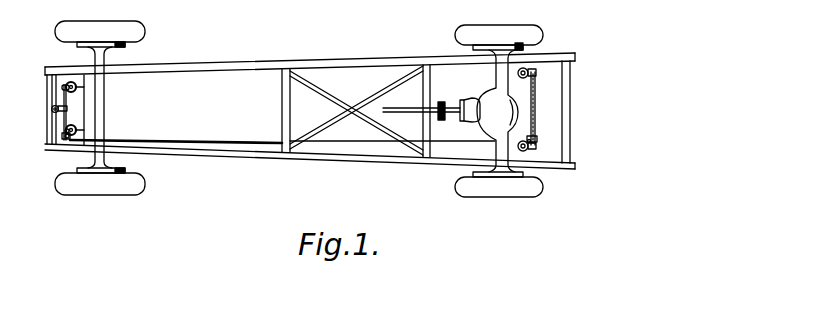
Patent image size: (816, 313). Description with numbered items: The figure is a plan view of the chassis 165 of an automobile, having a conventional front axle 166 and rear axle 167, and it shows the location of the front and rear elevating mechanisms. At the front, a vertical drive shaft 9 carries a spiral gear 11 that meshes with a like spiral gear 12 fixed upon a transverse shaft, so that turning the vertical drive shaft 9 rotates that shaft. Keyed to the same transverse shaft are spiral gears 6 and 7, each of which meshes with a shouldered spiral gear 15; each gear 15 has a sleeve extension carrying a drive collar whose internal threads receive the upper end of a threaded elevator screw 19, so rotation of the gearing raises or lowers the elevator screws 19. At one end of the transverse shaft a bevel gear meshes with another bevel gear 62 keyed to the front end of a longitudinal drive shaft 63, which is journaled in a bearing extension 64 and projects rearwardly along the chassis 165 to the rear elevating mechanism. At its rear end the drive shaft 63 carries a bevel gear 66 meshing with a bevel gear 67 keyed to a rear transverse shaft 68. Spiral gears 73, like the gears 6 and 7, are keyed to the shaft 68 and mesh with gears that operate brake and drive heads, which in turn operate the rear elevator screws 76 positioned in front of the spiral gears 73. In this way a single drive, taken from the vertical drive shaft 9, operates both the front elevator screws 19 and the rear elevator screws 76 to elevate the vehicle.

The spiral gear 6 is at (62, 87).
The spiral gear 7 is at (64, 146).
The vertical drive shaft 9 is at (53, 107).
The spiral gear 11 is at (62, 112).
The spiral gear 12 is at (63, 114).
The shouldered spiral gear 15 is at (69, 84).
The threaded elevator screw 19 is at (78, 87).
The bevel gear 62 is at (67, 139).
The drive shaft 63 is at (225, 144).
The bearing extension 64 is at (46, 180).
The bevel gear 66 is at (536, 139).
The bevel gear 67 is at (531, 142).
The transverse shaft 68 is at (534, 100).
The spiral gear 73 is at (536, 72).
The elevator screw 76 is at (527, 68).
The vehicle chassis 165 is at (362, 158).
The front axle 166 is at (100, 113).
The rear axle 167 is at (498, 108).